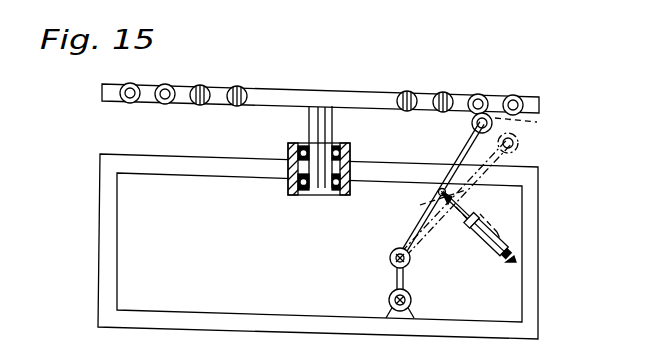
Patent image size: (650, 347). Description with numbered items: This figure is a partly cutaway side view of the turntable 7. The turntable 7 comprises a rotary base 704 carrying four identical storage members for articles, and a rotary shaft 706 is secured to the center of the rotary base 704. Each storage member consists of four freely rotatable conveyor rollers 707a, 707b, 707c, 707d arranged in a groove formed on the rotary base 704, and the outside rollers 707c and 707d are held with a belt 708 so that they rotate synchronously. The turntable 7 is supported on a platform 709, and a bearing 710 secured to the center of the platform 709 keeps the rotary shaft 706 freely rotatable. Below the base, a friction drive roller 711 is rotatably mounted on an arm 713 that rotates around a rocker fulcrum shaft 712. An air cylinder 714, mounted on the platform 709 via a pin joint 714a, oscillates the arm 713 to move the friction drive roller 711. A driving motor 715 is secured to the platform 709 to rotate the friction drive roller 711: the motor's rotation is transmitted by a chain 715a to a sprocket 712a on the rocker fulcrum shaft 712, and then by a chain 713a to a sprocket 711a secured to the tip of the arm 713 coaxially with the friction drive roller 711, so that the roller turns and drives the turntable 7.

The turntable 7 is at (249, 84).
The rotary base 704 is at (283, 95).
The rotary shaft 706 is at (309, 122).
The conveyor roller 707a is at (407, 92).
The conveyor roller 707b is at (443, 92).
The conveyor roller 707c is at (476, 94).
The conveyor roller 707d is at (523, 95).
The belt 708 is at (541, 124).
The platform 709 is at (100, 232).
The bearing 710 is at (287, 192).
The friction drive roller 711 is at (472, 125).
The sprocket 711a is at (493, 126).
The rocker fulcrum shaft 712 is at (412, 258).
The sprocket 712a is at (392, 260).
The arm 713 is at (413, 230).
The chain 713a is at (427, 200).
The air cylinder 714 is at (494, 232).
The pin joint 714a is at (509, 260).
The driving motor 715 is at (417, 300).
The chain 715a is at (390, 283).